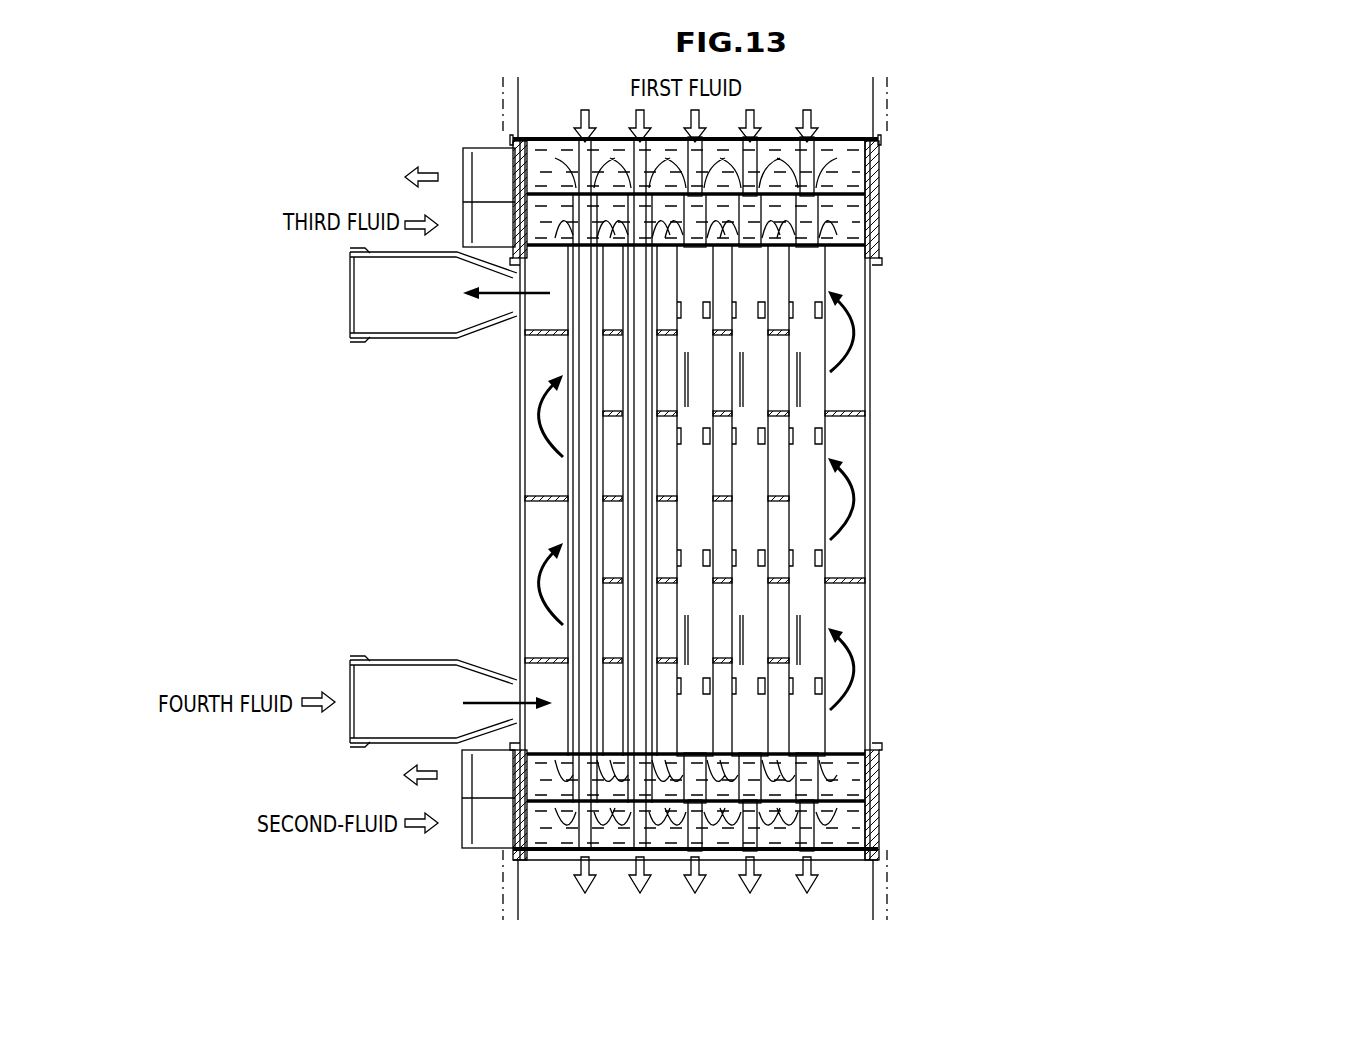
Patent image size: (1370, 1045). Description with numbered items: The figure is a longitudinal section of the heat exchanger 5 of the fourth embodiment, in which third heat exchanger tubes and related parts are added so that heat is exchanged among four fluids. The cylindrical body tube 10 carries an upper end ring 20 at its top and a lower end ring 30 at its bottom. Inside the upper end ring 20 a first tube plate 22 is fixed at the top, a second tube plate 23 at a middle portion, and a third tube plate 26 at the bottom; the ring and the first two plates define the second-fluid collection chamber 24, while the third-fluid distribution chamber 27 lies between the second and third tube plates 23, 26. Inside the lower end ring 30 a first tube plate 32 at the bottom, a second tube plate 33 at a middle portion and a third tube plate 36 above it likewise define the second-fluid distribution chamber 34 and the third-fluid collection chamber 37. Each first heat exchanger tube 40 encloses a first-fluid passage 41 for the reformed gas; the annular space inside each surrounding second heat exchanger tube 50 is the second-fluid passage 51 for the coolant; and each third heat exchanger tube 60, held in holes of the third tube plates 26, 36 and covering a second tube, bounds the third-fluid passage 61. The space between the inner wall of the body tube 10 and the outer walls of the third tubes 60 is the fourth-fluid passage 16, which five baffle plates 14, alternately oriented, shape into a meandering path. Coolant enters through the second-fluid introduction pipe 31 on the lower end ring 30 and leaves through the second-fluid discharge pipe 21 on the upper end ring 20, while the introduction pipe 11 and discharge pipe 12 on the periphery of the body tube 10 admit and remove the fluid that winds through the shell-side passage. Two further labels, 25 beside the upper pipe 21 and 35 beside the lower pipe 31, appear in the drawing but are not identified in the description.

The heat exchanger 5 is at (294, 179).
The body tube 10 is at (870, 450).
The third-fluid introduction pipe 11 is at (387, 340).
The third-fluid discharge pipe 12 is at (395, 657).
The baffle plate 14 is at (855, 581).
The fourth-fluid passage 16 is at (850, 611).
The upper end ring 20 is at (876, 255).
The second-fluid discharge pipe 21 is at (487, 160).
The first tube plate 22 is at (870, 139).
The second tube plate 23 is at (860, 194).
The second-fluid collection chamber 24 is at (858, 168).
The third fluid inlet 25 is at (465, 222).
The third tube plate 26 is at (850, 247).
The third-fluid distribution chamber 27 is at (850, 232).
The lower end ring 30 is at (876, 822).
The second-fluid introduction pipe 31 is at (490, 830).
The first tube plate 32 is at (860, 850).
The second tube plate 33 is at (860, 801).
The second-fluid distribution chamber 34 is at (850, 830).
The second fluid inlet 35 is at (466, 782).
The third tube plate 36 is at (862, 754).
The third-fluid collection chamber 37 is at (850, 776).
The first heat exchanger tube 40 is at (806, 162).
The first-fluid passage 41 is at (584, 368).
The second heat exchanger tube 50 is at (818, 216).
The second-fluid passage 51 is at (578, 474).
The third heat exchanger tube 60 is at (824, 400).
The third-fluid passage 61 is at (572, 528).